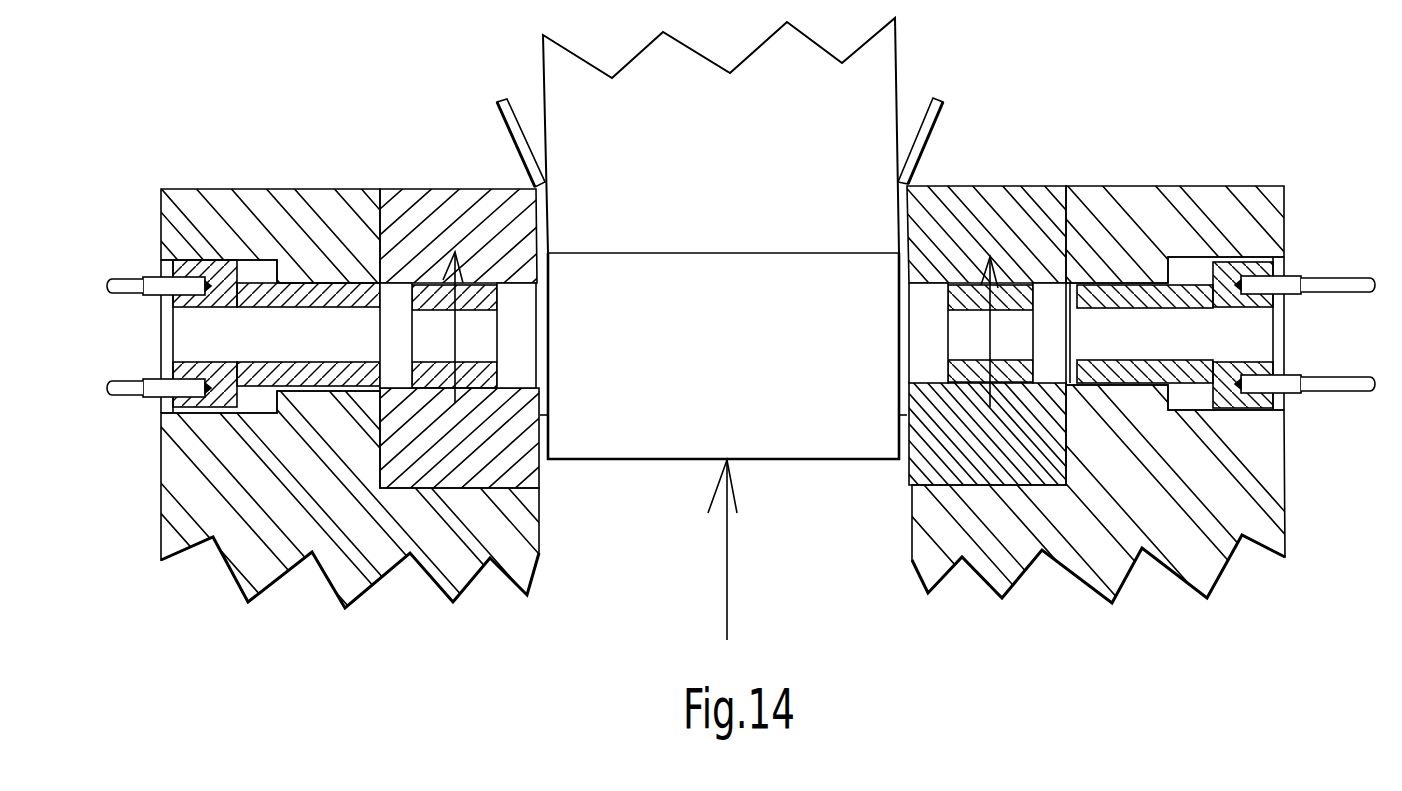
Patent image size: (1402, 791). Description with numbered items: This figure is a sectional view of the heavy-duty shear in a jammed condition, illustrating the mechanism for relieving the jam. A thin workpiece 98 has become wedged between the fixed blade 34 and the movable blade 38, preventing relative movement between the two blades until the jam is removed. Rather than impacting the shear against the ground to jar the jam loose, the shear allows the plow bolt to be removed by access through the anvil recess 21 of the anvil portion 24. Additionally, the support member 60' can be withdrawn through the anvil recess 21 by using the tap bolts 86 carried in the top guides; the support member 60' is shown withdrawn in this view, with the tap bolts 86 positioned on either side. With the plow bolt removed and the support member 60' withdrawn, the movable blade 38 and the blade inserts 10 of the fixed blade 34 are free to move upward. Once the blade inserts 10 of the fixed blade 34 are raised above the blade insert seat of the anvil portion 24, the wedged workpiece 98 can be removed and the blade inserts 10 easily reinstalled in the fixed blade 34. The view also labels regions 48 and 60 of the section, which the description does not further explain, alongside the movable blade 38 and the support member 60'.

The blade inserts 10 is at (387, 202).
The anvil recess 21 is at (1197, 397).
The anvil portion 24 is at (225, 228).
The fixed blade 34 is at (1290, 183).
The movable blade 38 is at (740, 193).
The lower chamber 48 is at (740, 376).
The sleeve 60 is at (317, 336).
The support member 60' is at (1143, 333).
The tap bolts 86 is at (157, 285).
The workpiece 98 is at (493, 107).